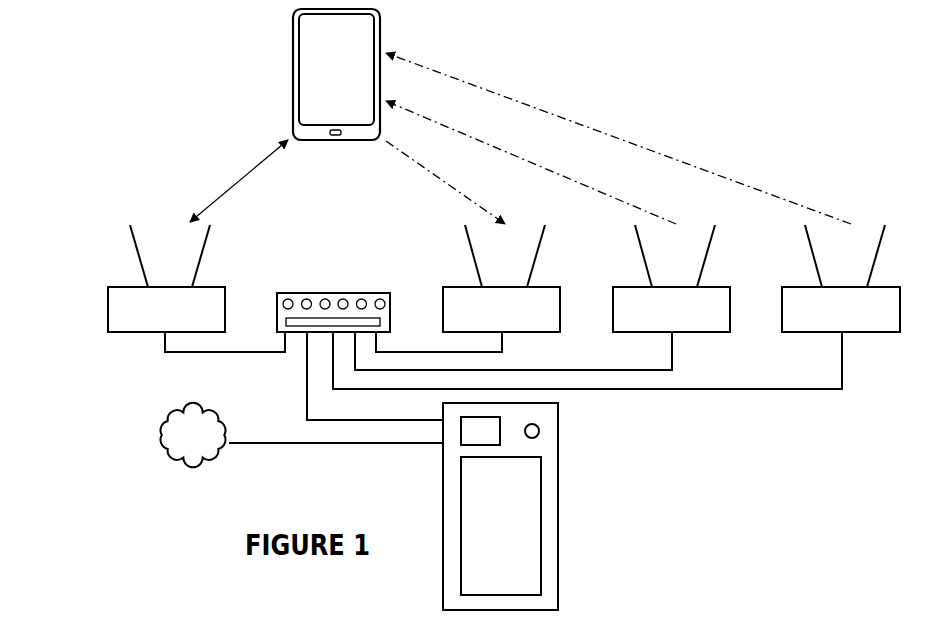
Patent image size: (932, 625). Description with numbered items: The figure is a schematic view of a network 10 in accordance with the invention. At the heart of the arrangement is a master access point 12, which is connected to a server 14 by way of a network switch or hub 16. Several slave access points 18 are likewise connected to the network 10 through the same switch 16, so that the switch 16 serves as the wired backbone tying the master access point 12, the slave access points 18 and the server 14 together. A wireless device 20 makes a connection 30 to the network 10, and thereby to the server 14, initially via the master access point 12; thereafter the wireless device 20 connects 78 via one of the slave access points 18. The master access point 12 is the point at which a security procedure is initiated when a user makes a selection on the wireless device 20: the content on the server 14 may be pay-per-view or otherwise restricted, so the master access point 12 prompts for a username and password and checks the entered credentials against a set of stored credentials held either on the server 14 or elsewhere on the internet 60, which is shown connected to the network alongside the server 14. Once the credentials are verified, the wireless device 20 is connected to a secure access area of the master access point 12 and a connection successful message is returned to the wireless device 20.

The network 10 is at (186, 83).
The master access point 12 is at (166, 278).
The server 14 is at (500, 506).
The network switch or hub 16 is at (352, 293).
The slave access points 18 is at (671, 278).
The wireless device 20 is at (336, 74).
The connection 30 is at (239, 181).
The internet 60 is at (193, 435).
The connection via slave access point 78 is at (618, 138).